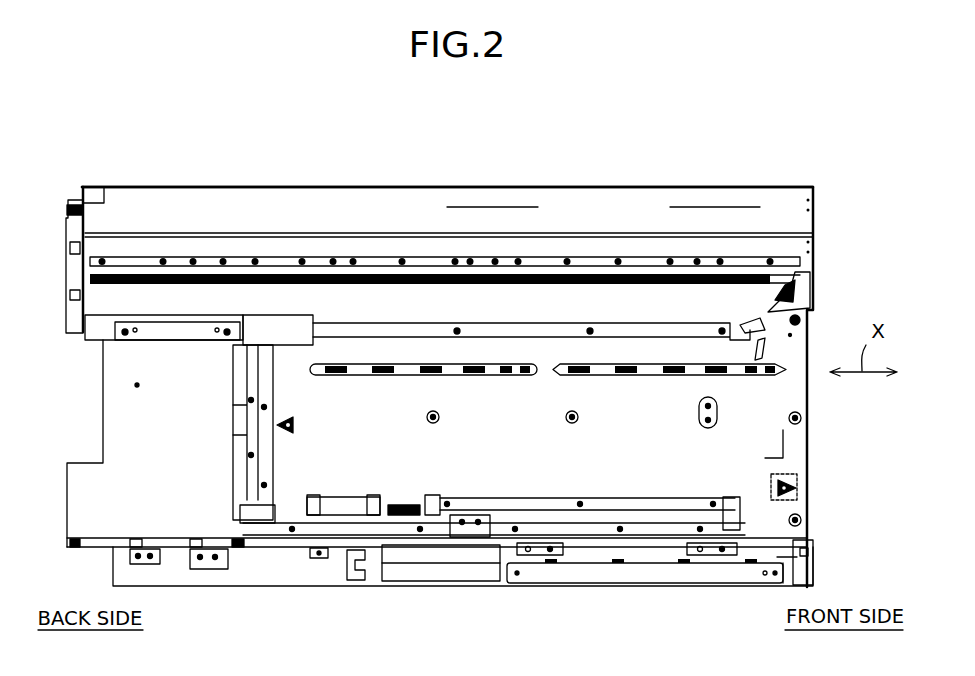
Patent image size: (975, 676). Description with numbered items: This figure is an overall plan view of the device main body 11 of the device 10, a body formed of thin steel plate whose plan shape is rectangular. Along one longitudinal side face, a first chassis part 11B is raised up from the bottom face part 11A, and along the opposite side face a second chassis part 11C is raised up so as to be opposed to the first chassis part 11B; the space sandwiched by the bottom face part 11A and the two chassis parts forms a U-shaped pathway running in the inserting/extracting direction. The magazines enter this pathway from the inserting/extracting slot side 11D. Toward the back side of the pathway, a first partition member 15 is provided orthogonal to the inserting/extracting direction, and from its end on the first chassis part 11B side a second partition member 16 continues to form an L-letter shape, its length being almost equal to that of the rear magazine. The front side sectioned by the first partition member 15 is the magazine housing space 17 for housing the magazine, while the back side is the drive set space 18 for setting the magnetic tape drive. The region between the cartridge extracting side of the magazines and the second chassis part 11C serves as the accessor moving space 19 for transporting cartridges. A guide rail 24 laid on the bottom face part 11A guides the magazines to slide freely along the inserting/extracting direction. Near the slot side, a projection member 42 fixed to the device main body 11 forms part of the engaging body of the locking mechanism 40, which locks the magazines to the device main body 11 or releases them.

The device 10 is at (745, 158).
The device main body 11 is at (541, 588).
The bottom face part 11A is at (795, 440).
The first chassis part 11B is at (649, 588).
The second chassis part 11C is at (636, 186).
The inserting/extracting slot side 11D is at (803, 331).
The first partition member 15 is at (242, 466).
The second partition member 16 is at (300, 540).
The magazine housing space 17 is at (490, 452).
The drive set space 18 is at (154, 451).
The accessor moving space 19 is at (350, 186).
The guide rail 24 is at (661, 380).
The locking mechanism 40 is at (795, 496).
The projection member 42 is at (795, 480).